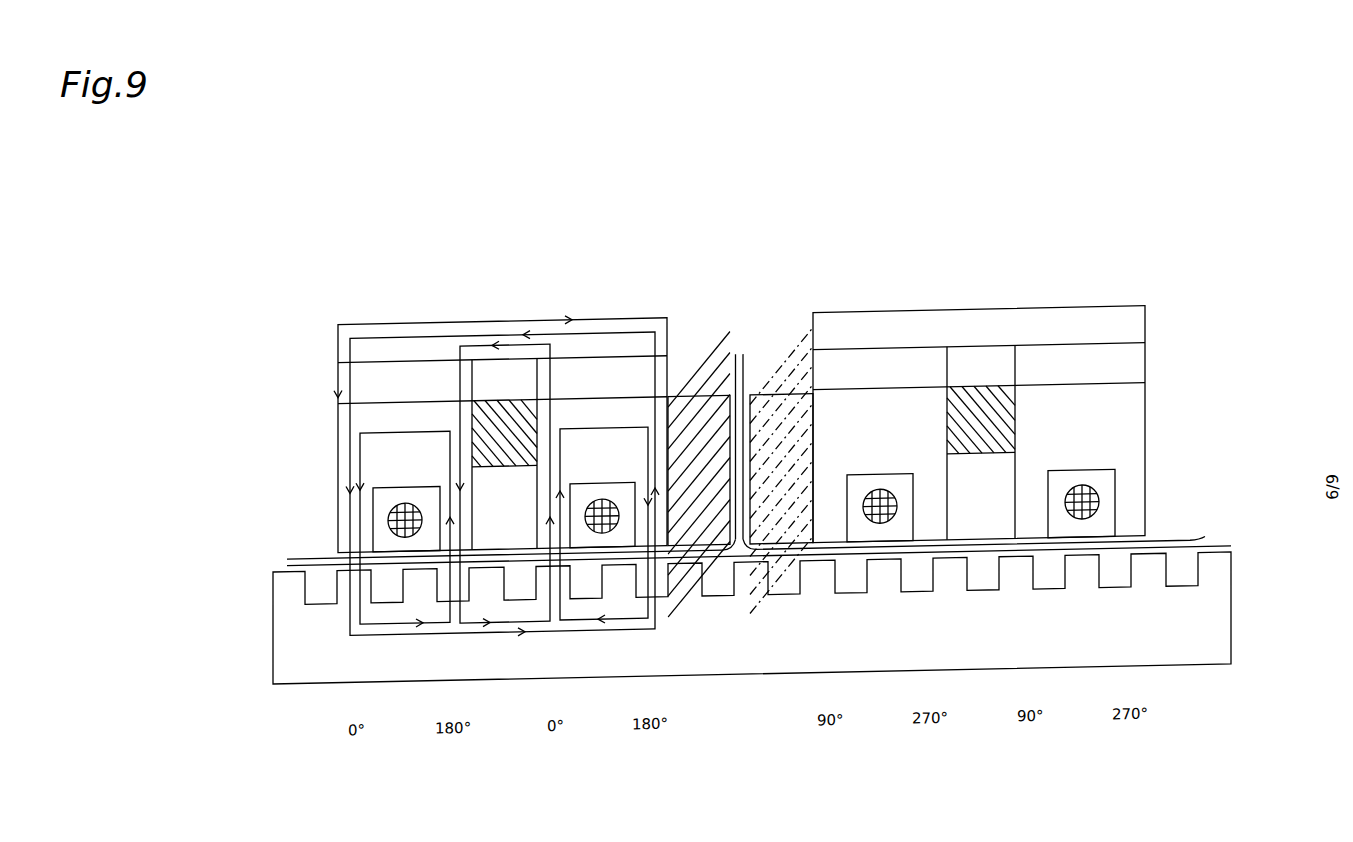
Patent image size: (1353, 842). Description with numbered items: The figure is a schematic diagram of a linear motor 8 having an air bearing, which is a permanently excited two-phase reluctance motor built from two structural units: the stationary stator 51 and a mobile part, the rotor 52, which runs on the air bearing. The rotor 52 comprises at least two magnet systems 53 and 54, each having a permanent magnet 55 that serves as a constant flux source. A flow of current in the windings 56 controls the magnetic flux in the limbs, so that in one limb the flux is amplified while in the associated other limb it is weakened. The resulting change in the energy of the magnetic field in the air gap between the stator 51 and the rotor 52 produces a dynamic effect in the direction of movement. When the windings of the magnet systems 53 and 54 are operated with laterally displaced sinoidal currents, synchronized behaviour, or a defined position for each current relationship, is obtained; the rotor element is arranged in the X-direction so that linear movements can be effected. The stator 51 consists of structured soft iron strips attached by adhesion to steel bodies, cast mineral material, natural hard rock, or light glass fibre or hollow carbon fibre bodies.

The linear motor 8 is at (785, 288).
The stator 51 is at (1197, 641).
The rotor 52 is at (1104, 428).
The magnet system 53 is at (573, 386).
The magnet system 54 is at (1073, 345).
The permanent magnet 55 is at (368, 377).
The windings 56 is at (400, 522).